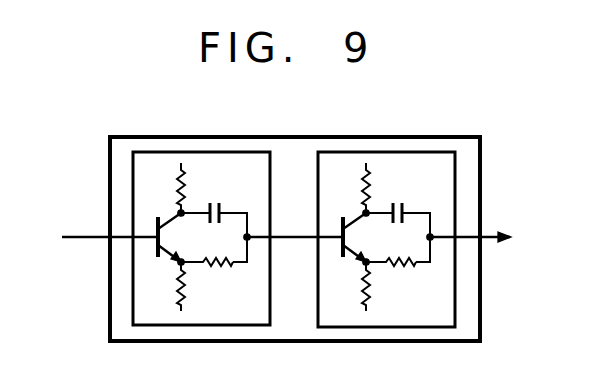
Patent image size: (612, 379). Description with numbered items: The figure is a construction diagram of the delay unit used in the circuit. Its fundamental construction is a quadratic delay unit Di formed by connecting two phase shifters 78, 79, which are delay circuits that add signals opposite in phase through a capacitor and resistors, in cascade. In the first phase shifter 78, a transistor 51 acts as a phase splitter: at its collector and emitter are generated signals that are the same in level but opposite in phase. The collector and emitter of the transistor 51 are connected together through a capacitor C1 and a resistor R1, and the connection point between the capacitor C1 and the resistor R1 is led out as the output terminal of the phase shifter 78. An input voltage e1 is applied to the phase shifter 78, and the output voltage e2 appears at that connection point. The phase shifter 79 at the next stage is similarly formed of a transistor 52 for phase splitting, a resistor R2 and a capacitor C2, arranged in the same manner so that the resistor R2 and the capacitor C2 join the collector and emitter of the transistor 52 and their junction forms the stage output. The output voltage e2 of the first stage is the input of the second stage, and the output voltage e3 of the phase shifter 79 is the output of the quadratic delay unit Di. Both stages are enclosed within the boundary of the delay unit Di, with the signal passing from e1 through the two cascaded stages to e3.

The phase shifter 78 is at (200, 152).
The phase shifter 79 is at (384, 152).
The quadratic delay unit Di is at (442, 124).
The transistor 51 is at (157, 257).
The transistor 52 is at (342, 257).
The capacitor C1 is at (215, 203).
The capacitor C2 is at (398, 203).
The resistor R1 is at (213, 263).
The resistor R2 is at (401, 263).
The input voltage e1 is at (70, 240).
The output voltage e2 is at (286, 240).
The output voltage e3 is at (492, 240).